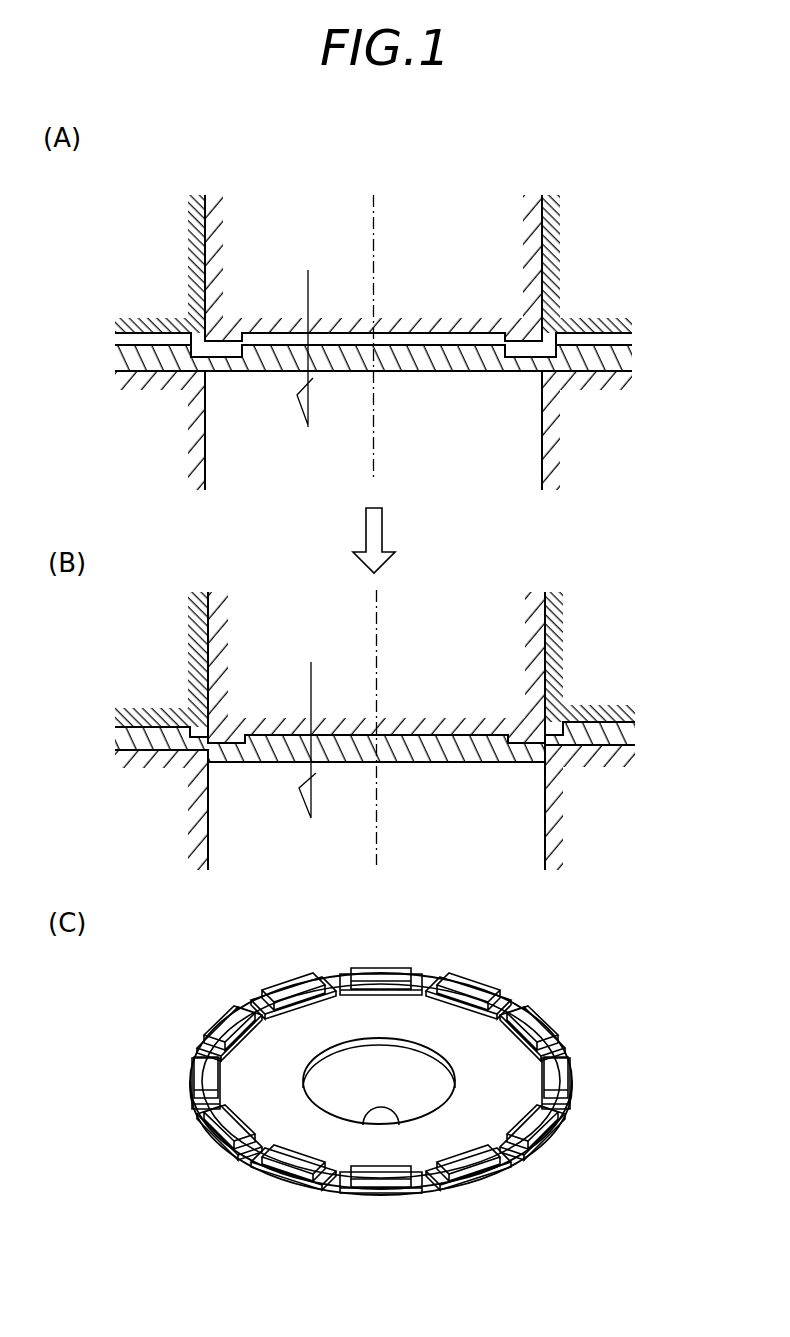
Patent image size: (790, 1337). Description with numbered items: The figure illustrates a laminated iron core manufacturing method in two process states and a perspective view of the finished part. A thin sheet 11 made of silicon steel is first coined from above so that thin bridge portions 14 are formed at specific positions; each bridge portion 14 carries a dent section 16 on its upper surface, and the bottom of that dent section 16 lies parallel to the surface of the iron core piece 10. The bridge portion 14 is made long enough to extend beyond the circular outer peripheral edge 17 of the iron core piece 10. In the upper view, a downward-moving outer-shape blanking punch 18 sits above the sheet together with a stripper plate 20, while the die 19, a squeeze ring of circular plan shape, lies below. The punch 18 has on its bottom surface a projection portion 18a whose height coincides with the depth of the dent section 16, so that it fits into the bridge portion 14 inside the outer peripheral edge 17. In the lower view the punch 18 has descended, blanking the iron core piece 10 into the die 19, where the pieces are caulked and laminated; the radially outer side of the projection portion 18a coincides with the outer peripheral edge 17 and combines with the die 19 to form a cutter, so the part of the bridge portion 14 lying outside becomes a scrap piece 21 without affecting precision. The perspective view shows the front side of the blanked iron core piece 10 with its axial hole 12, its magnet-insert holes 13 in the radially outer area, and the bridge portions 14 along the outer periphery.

The iron core piece 10 is at (350, 386).
The thin sheet 11 is at (620, 355).
The axial hole 12 is at (398, 1125).
The magnet-insert holes 13 is at (467, 1002).
The bridge portion 14 is at (218, 341).
The dent section 16 is at (228, 365).
The outer peripheral edge 17 is at (203, 763).
The outer-shape blanking punch 18 is at (505, 238).
The projection portion 18a is at (237, 341).
The die 19 is at (577, 452).
The stripper plate 20 is at (173, 243).
The scrap piece 21 is at (627, 733).